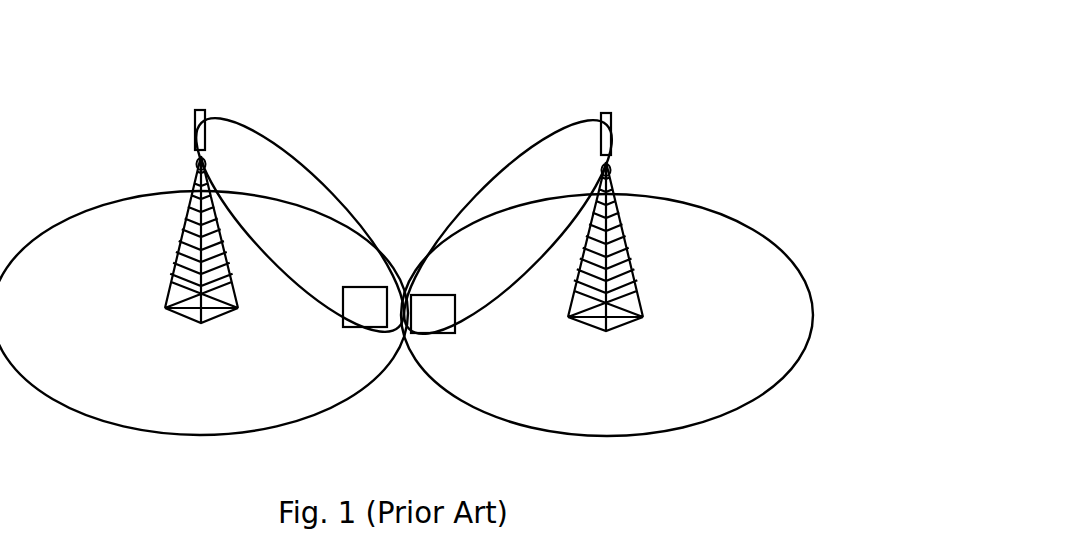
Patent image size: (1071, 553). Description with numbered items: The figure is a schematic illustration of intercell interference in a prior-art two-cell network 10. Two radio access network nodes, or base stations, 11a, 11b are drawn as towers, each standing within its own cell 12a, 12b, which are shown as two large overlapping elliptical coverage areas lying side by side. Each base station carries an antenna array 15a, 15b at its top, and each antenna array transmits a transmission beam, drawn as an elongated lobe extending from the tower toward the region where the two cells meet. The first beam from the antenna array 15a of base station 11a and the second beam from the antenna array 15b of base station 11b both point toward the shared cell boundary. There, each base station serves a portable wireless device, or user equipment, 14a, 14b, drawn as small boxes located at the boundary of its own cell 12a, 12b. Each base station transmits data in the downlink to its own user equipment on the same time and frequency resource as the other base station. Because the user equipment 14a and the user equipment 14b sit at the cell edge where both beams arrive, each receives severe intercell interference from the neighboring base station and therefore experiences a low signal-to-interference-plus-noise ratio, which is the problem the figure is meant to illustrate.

The two-cell network 10 is at (738, 93).
The radio access network node 11a is at (176, 292).
The radio access network node 11b is at (638, 308).
The cell 12a is at (66, 408).
The cell 12b is at (773, 380).
The portable wireless device 14a is at (378, 328).
The portable wireless device 14b is at (440, 318).
The antenna array 15a is at (195, 132).
The antenna array 15b is at (612, 118).